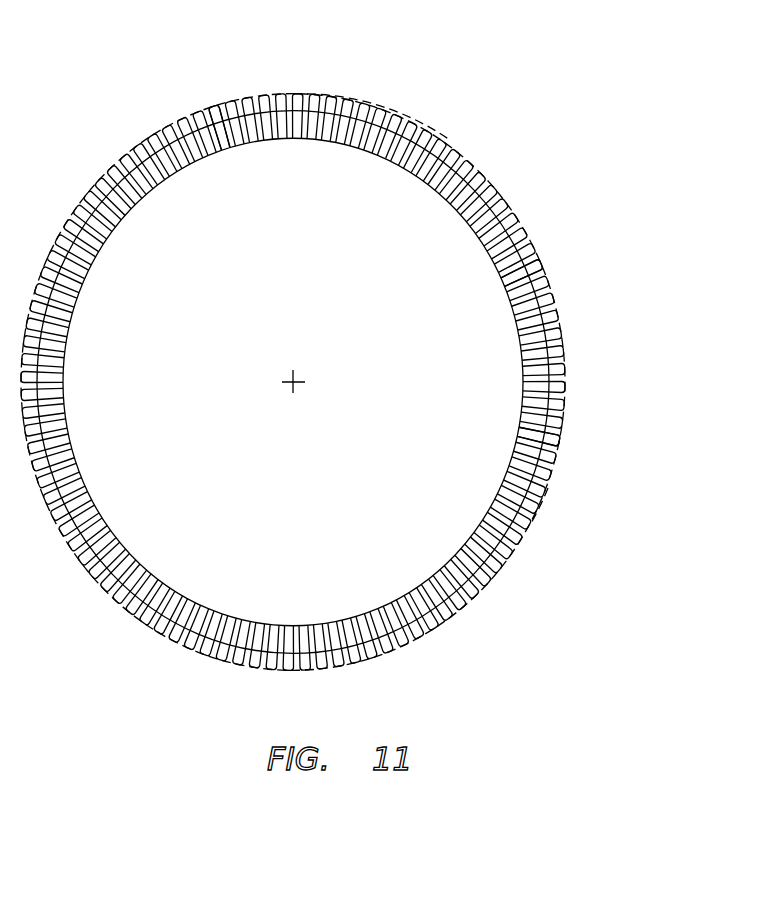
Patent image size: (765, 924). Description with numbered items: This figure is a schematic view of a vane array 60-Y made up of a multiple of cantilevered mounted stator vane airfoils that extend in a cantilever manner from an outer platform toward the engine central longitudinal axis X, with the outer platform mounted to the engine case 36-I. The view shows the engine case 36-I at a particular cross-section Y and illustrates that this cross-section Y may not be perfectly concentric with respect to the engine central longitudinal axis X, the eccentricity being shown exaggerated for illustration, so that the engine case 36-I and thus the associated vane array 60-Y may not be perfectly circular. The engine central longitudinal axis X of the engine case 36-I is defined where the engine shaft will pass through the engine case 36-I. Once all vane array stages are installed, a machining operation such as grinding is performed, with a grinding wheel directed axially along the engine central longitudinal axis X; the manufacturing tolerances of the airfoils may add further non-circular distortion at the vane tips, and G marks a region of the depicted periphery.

The engine case 36-I is at (522, 99).
The vane array 60-Y is at (214, 128).
The cross-section Y is at (381, 103).
The gap G is at (540, 505).
The engine central longitudinal axis X is at (295, 385).